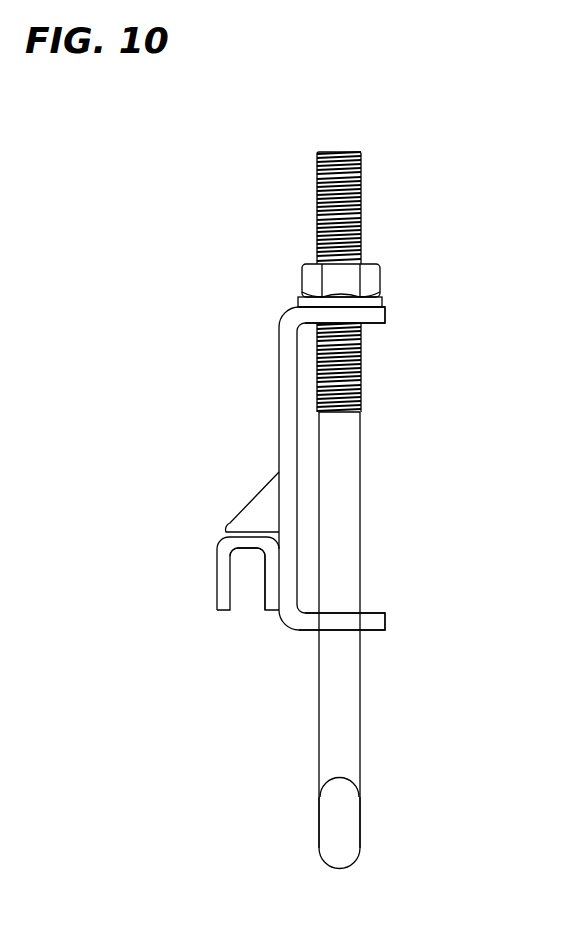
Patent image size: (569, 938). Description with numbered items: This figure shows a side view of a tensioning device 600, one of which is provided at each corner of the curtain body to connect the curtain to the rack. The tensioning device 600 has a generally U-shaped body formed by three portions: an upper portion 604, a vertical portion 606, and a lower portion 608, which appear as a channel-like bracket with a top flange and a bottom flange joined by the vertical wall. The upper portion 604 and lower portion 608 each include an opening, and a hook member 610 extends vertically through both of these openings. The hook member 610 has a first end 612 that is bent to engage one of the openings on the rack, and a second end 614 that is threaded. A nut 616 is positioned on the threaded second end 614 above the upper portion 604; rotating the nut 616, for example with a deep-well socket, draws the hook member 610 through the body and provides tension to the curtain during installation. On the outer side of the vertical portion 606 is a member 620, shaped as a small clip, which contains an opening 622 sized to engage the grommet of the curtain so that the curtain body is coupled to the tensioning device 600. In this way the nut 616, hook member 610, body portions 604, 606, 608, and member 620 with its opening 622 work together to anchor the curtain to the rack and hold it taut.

The tensioning device 600 is at (428, 124).
The portion 604 is at (370, 313).
The portion 606 is at (288, 397).
The portion 608 is at (367, 622).
The hook member 610 is at (346, 510).
The first end 612 is at (340, 827).
The second end 614 is at (356, 207).
The nut 616 is at (368, 279).
The member 620 is at (223, 571).
The opening 622 is at (247, 587).